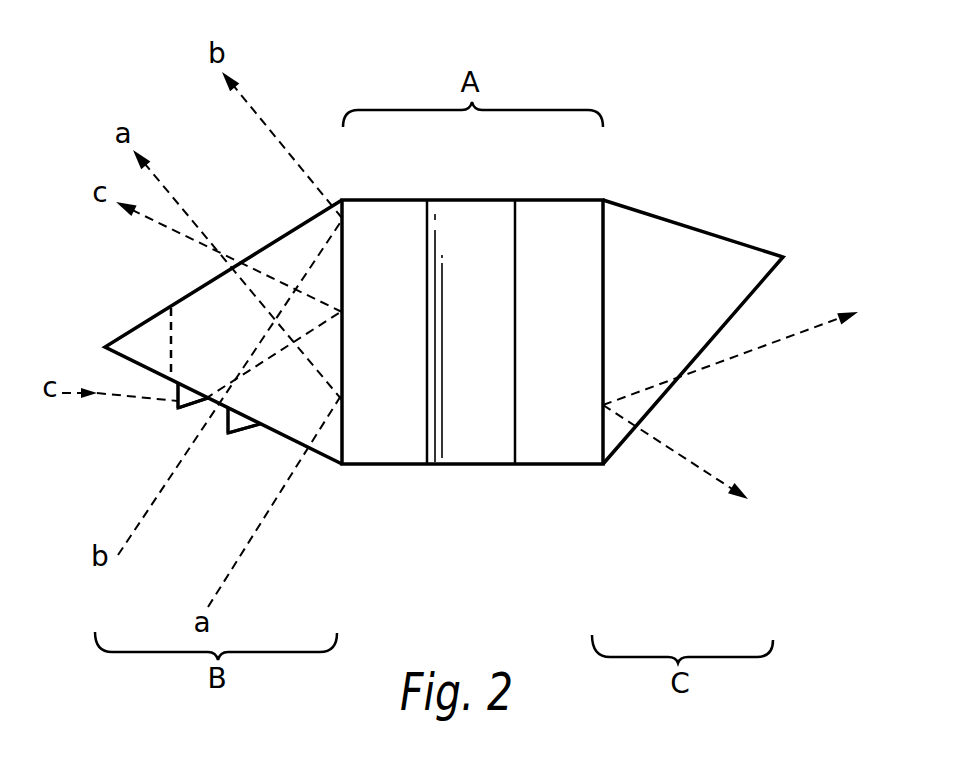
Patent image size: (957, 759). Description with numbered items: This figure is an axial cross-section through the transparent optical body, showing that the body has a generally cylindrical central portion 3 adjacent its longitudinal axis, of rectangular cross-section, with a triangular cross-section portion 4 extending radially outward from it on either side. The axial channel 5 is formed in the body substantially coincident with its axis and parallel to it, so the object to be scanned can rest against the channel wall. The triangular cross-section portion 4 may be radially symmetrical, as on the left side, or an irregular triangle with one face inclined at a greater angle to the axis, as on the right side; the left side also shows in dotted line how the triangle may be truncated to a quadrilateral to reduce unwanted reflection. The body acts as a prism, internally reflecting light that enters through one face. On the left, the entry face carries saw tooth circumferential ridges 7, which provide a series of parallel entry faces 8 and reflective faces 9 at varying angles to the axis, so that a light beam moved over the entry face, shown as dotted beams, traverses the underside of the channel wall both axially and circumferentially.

The cylindrical central portion 3 is at (560, 235).
The triangular cross-section portion 4 is at (200, 300).
The axial channel 5 is at (475, 228).
The saw tooth circumferential ridges 7 is at (178, 412).
The entry faces 8 is at (177, 404).
The reflective faces 9 is at (193, 406).